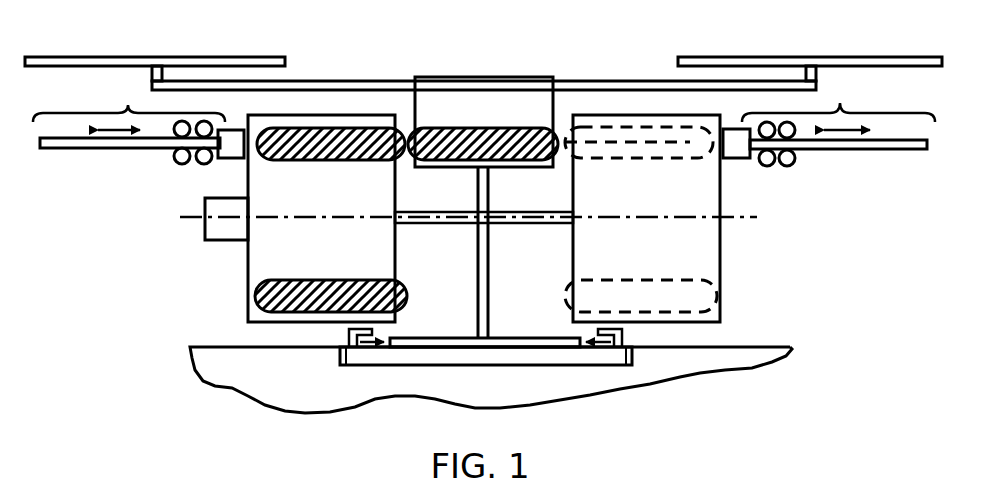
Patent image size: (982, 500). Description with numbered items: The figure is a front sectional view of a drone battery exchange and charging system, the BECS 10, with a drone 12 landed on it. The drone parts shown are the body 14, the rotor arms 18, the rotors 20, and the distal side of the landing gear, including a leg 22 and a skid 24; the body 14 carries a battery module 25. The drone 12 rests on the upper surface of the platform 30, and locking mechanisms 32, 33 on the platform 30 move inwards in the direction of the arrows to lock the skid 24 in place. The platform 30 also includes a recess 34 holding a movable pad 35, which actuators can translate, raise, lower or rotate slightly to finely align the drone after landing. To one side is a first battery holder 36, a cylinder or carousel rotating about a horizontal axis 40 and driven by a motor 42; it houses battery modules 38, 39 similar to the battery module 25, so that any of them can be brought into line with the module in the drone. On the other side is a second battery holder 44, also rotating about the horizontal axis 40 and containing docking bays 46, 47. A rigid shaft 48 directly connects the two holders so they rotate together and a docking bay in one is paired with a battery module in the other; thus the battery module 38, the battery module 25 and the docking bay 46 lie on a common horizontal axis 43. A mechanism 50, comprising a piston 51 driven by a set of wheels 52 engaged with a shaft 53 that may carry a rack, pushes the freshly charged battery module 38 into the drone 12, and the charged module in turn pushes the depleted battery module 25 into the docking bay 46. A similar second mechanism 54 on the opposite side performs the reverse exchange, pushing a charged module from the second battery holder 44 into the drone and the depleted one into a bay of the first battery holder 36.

The BECS 10 is at (162, 384).
The drone 12 is at (127, 57).
The body 14 is at (507, 77).
The rotor arms 18 is at (337, 80).
The rotors 20 is at (270, 57).
The leg 22 is at (490, 285).
The skid 24 is at (503, 340).
The battery module 25 is at (478, 128).
The platform 30 is at (768, 345).
The locking mechanism 32 is at (623, 333).
The locking mechanism 33 is at (348, 332).
The recess 34 is at (339, 353).
The movable pad 35 is at (450, 367).
The first battery holder 36 is at (247, 277).
The battery module 38 is at (343, 162).
The battery module 39 is at (320, 279).
The horizontal axis 40 is at (192, 219).
The motor 42 is at (230, 242).
The common horizontal axis 43 is at (665, 143).
The second battery holder 44 is at (720, 293).
The docking bay 46 is at (638, 160).
The docking bay 47 is at (643, 280).
The rigid shaft 48 is at (453, 227).
The mechanism 50 is at (129, 103).
The piston 51 is at (228, 158).
The wheels 52 is at (173, 163).
The shaft 53 is at (77, 148).
The second mechanism 54 is at (829, 121).